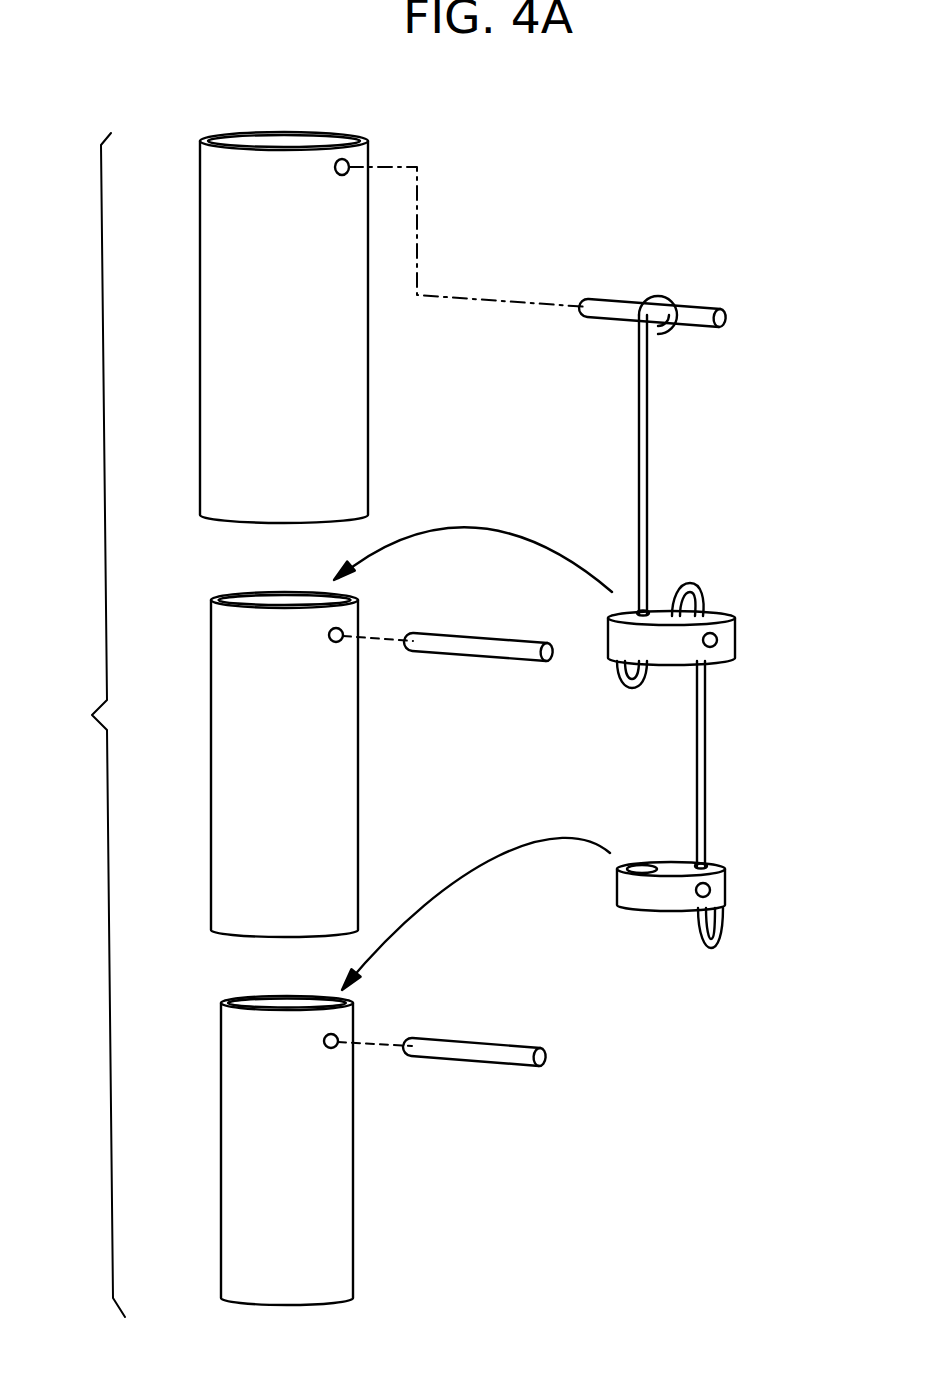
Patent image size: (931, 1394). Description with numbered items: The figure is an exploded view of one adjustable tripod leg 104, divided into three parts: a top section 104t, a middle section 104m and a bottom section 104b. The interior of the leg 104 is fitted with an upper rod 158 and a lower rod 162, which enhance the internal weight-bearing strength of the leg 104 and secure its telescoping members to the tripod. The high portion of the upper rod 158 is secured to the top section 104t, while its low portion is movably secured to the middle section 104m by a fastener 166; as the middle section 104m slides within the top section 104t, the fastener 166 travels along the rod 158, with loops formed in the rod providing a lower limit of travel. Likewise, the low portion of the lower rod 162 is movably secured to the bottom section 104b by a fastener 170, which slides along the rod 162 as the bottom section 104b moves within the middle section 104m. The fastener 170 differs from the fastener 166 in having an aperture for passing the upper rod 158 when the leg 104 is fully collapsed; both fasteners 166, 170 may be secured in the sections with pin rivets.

The leg 104 is at (90, 725).
The top section 104t is at (200, 266).
The middle section 104m is at (211, 747).
The bottom section 104b is at (221, 1122).
The upper rod 158 is at (647, 462).
The lower rod 162 is at (705, 770).
The fastener 166 is at (735, 640).
The fastener 170 is at (725, 893).